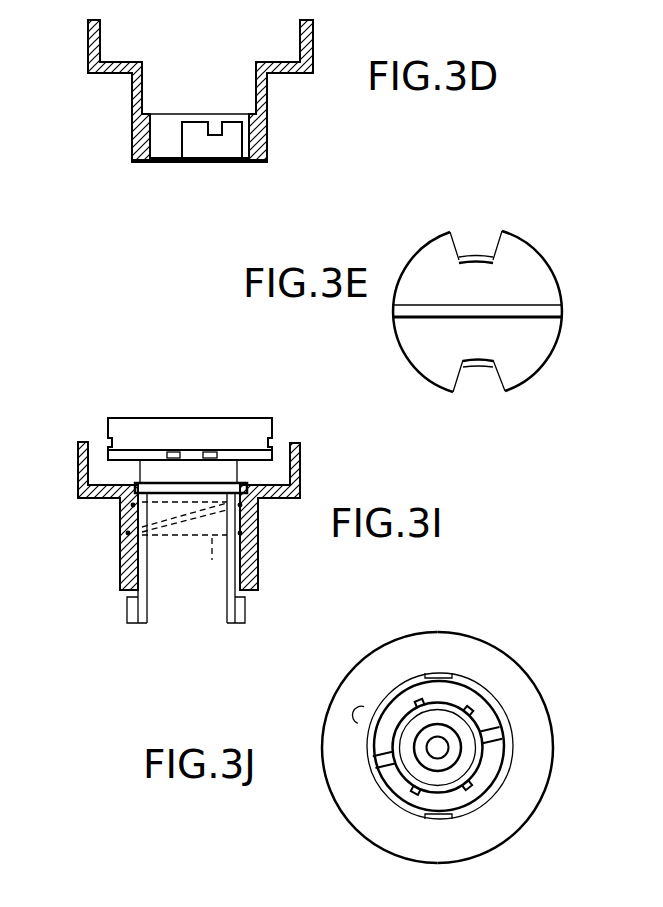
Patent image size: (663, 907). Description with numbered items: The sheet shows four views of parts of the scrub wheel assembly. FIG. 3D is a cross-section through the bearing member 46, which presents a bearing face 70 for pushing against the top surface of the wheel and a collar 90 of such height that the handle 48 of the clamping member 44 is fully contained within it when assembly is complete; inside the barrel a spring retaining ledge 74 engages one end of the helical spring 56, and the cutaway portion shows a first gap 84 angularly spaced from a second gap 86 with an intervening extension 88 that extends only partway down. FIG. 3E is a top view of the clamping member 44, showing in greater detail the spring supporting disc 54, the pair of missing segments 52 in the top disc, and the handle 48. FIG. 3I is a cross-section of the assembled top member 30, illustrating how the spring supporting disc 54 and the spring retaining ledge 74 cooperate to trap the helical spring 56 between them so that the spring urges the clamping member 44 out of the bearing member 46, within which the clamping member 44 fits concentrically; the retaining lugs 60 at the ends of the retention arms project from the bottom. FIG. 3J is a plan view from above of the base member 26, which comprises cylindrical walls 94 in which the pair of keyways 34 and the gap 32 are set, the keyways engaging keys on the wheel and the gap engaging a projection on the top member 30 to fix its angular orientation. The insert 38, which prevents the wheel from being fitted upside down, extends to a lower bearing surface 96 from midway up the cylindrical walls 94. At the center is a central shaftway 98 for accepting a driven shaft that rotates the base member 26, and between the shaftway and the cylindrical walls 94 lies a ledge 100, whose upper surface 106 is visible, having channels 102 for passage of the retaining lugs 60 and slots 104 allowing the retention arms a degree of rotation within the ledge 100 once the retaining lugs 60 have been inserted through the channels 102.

In FIG. 3J, the base member 26 is at (293, 837).
In FIG. 3I, the top member 30 is at (355, 592).
In FIG. 3J, the gap 32 is at (493, 808).
In FIG. 3J, the keyways 34 is at (437, 672).
In FIG. 3J, the insert 38 is at (350, 717).
In FIG. 3E, the clamping member 44 is at (377, 372).
In FIG. 3I, the clamping member 44 is at (267, 403).
In FIG. 3D, the bearing member 46 is at (352, 166).
In FIG. 3I, the bearing member 46 is at (67, 440).
In FIG. 3E, the handle 48 is at (560, 313).
In FIG. 3E, the missing segments 52 is at (483, 240).
In FIG. 3E, the spring supporting disc 54 is at (467, 243).
In FIG. 3I, the spring supporting disc 54 is at (258, 496).
In FIG. 3I, the helical spring 56 is at (184, 540).
In FIG. 3I, the retaining lugs 60 is at (125, 613).
In FIG. 3D, the bearing face 70 is at (113, 73).
In FIG. 3D, the spring retaining ledge 74 is at (143, 112).
In FIG. 3I, the spring retaining ledge 74 is at (258, 548).
In FIG. 3D, the first gap 84 is at (235, 128).
In FIG. 3D, the second gap 86 is at (197, 128).
In FIG. 3D, the intervening extension 88 is at (215, 136).
In FIG. 3D, the collar 90 is at (88, 33).
In FIG. 3J, the cylindrical walls 94 is at (502, 707).
In FIG. 3J, the lower bearing surface 96 is at (375, 663).
In FIG. 3J, the central shaftway 98 is at (447, 755).
In FIG. 3J, the ledge 100 is at (461, 800).
In FIG. 3J, the channels 102 is at (495, 723).
In FIG. 3J, the slots 104 is at (500, 830).
In FIG. 3J, the upper surface 106 is at (418, 692).